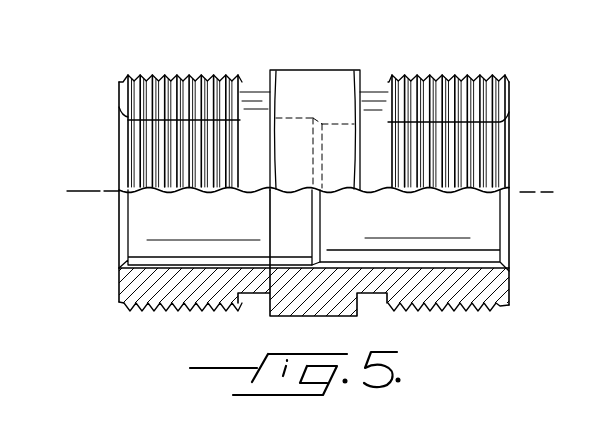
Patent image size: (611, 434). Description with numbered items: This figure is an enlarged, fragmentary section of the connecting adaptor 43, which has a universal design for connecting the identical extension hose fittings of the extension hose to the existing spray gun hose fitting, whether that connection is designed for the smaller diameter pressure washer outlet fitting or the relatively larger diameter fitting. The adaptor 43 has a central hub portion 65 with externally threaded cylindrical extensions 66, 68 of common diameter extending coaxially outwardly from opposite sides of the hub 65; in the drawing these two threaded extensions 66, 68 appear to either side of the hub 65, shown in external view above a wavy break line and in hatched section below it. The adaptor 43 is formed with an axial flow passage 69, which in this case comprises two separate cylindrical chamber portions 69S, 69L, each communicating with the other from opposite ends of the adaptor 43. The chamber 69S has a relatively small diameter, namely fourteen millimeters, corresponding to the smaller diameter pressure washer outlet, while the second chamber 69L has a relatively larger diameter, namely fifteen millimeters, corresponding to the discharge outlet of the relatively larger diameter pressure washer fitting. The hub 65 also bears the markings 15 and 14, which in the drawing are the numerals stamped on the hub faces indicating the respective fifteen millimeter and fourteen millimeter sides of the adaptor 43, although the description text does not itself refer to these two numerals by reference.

The adaptor 43 is at (327, 71).
The size marking 14 is at (339, 149).
The size marking 15 is at (297, 149).
The central hub portion 65 is at (273, 318).
The externally threaded cylindrical extension 66 is at (180, 299).
The externally threaded cylindrical extension 68 is at (484, 302).
The axial flow passage 69 is at (349, 230).
The cylindrical chamber portion 69L is at (223, 267).
The cylindrical chamber portion 69S is at (425, 261).